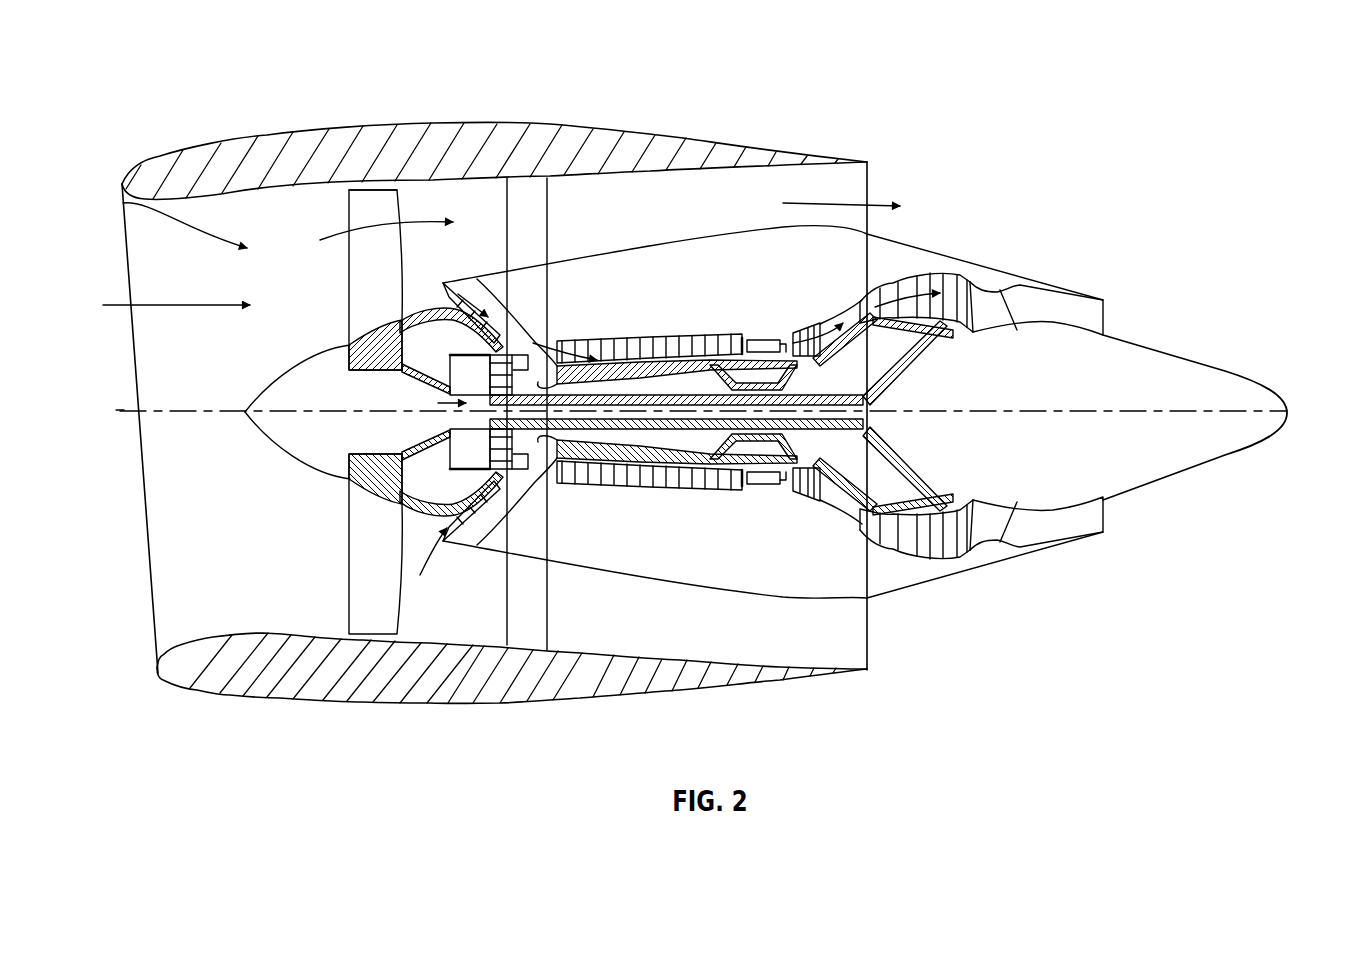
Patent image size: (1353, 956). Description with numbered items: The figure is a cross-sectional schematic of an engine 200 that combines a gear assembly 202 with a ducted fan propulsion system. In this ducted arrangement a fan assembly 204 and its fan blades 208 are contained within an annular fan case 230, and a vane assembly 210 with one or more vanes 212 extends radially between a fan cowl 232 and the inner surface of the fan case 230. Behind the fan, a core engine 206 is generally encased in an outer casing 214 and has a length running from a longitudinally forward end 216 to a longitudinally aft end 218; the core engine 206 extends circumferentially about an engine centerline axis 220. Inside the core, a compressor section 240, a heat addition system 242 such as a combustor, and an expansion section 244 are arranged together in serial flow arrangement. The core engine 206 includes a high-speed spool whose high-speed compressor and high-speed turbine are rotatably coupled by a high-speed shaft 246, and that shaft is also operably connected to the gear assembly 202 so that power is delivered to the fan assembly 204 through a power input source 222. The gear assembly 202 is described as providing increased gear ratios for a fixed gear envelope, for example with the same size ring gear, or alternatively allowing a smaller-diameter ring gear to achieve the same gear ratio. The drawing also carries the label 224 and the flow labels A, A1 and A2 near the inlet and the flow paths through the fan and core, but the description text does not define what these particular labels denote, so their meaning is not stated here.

The engine 200 is at (930, 96).
The gear assembly 202 is at (345, 480).
The fan assembly 204 is at (123, 203).
The core engine 206 is at (864, 262).
The fan blades 208 is at (349, 203).
The vane assembly 210 is at (570, 220).
The vanes 212 is at (507, 217).
The outer casing 214 is at (987, 278).
The longitudinally forward end 216 is at (238, 410).
The longitudinally aft end 218 is at (1300, 413).
The engine centerline axis 220 is at (120, 412).
The power input source 222 is at (448, 542).
The hub 224 is at (413, 385).
The annular fan case 230 is at (497, 122).
The fan cowl 232 is at (630, 257).
The compressor section 240 is at (610, 500).
The heat addition system 242 is at (752, 497).
The expansion section 244 is at (905, 565).
The high-speed shaft 246 is at (907, 367).
The inlet airflow A is at (177, 307).
The core airflow A1 is at (427, 300).
The bypass airflow A2 is at (383, 213).